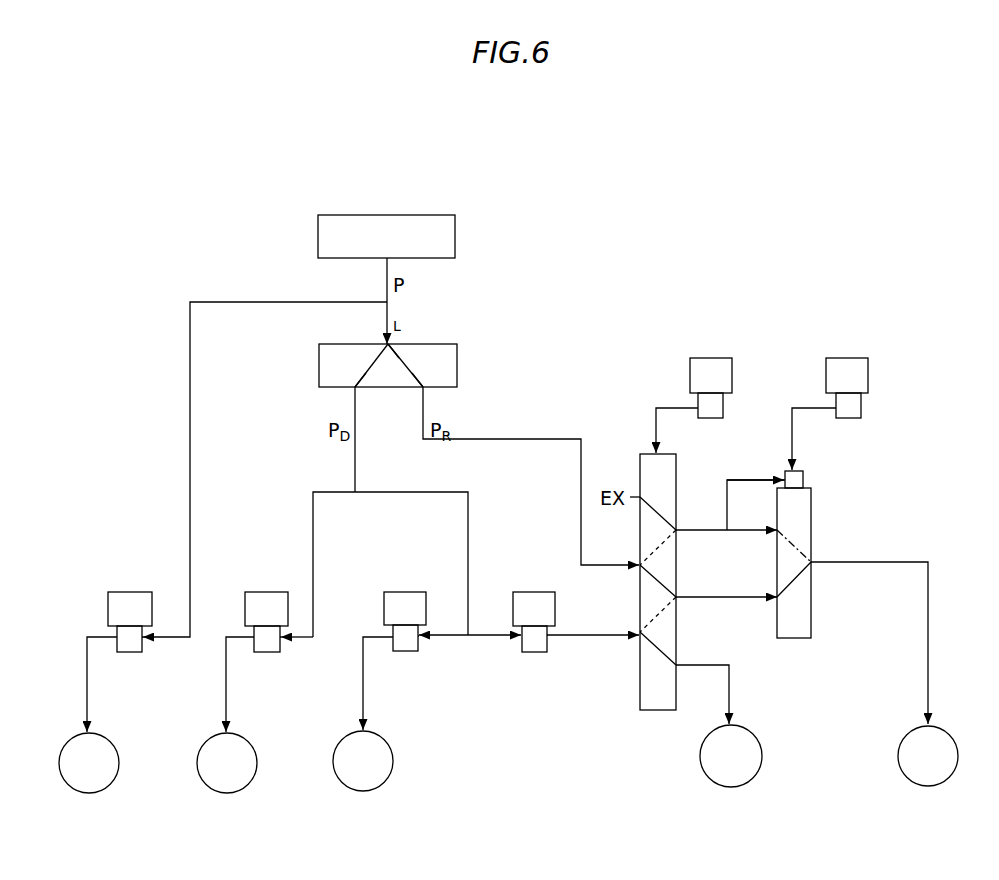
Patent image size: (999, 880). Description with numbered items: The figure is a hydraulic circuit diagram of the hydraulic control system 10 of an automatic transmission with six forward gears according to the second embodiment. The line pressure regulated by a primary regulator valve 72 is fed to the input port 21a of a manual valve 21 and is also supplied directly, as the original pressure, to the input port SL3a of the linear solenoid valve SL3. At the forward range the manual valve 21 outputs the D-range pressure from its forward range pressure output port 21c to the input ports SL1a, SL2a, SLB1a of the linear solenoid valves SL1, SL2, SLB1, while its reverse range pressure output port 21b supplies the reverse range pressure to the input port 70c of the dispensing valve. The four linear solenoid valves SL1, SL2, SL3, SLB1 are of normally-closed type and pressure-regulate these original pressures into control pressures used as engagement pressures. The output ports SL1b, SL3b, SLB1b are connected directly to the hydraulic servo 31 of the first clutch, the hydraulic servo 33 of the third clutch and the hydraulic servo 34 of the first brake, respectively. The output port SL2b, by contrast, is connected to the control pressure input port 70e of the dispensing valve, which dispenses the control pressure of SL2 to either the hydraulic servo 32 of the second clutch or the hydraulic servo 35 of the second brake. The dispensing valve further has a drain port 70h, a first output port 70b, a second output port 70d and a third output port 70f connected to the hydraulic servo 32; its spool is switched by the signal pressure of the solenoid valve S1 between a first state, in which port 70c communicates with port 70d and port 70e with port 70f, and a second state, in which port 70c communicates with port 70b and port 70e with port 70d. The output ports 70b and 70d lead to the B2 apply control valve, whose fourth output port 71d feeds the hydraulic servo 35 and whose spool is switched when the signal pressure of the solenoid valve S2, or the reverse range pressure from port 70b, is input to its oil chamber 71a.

The hydraulic control system 10 is at (586, 160).
The primary regulator valve 72 is at (339, 224).
The manual valve 21 is at (339, 350).
The input port 21a is at (390, 343).
The reverse range pressure output port 21b is at (425, 387).
The forward range pressure output port 21c is at (355, 387).
The solenoid valve S1 is at (710, 362).
The solenoid valve S2 is at (838, 362).
The drain port 70h is at (704, 440).
The first output port 70b is at (676, 530).
The reverse range pressure input port 70c is at (639, 564).
The second output port 70d is at (676, 597).
The control pressure input port 70e is at (639, 631).
The third output port 70f is at (676, 665).
The oil chamber 71a is at (797, 476).
The fourth output port 71d is at (811, 562).
The linear solenoid valve SL3 is at (137, 592).
The input port SL3a is at (143, 638).
The output port SL3b is at (116, 637).
The linear solenoid valve SL1 is at (278, 592).
The input port SL1a is at (281, 638).
The output port SL1b is at (255, 637).
The linear solenoid valve SLB1 is at (415, 592).
The input port SLB1a is at (419, 636).
The output port SLB1b is at (393, 636).
The linear solenoid valve SL2 is at (537, 592).
The input port SL2a is at (521, 635).
The output port SL2b is at (548, 636).
The hydraulic servo 31 is at (236, 732).
The hydraulic servo 32 is at (737, 722).
The hydraulic servo 33 is at (98, 732).
The hydraulic servo 34 is at (375, 728).
The hydraulic servo 35 is at (936, 718).